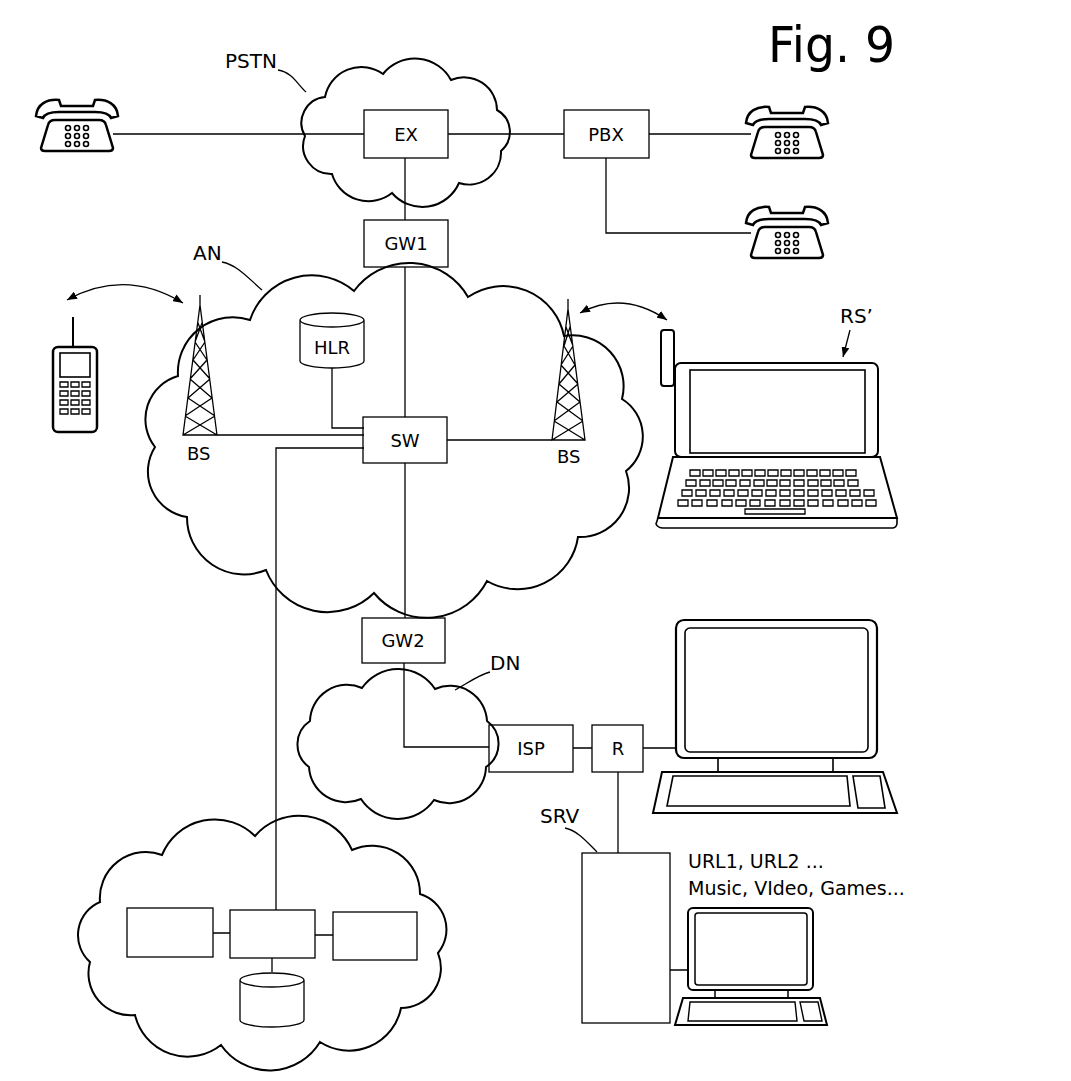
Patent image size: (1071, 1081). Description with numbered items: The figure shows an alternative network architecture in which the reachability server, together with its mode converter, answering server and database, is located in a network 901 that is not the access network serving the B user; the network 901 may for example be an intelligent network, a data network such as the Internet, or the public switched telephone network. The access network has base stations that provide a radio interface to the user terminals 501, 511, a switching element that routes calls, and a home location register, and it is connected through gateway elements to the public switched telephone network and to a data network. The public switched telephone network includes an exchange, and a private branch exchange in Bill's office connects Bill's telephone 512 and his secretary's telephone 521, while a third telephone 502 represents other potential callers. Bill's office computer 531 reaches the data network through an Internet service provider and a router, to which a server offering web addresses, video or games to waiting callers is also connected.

The third telephone 502 is at (100, 90).
The secretary's telephone 521 is at (748, 107).
The Bill's telephone 512 is at (748, 207).
The user terminal 501 is at (98, 357).
The Bill's mobile terminal 511 is at (815, 364).
The Bill's office computer 531 is at (785, 620).
The network 901 is at (167, 833).